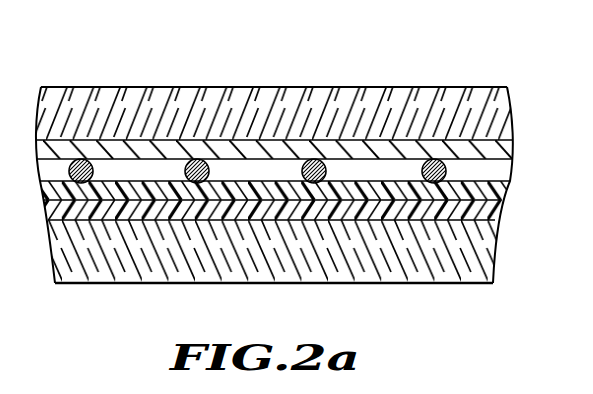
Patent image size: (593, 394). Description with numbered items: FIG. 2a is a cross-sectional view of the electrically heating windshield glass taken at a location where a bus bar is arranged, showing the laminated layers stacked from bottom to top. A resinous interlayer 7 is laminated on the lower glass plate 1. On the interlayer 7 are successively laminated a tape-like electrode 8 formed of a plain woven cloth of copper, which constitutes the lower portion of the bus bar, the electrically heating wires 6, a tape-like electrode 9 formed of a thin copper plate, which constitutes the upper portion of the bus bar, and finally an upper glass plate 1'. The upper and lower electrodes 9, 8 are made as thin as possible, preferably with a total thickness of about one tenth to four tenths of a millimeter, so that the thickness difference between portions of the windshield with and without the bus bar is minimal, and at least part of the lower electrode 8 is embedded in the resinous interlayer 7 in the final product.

The upper glass plate 1' is at (275, 77).
The electrically heating wires 6 is at (434, 160).
The tape-like electrode 9 is at (497, 149).
The tape-like electrode 8 is at (504, 188).
The resinous interlayer 7 is at (495, 212).
The lower glass plate 1 is at (275, 278).